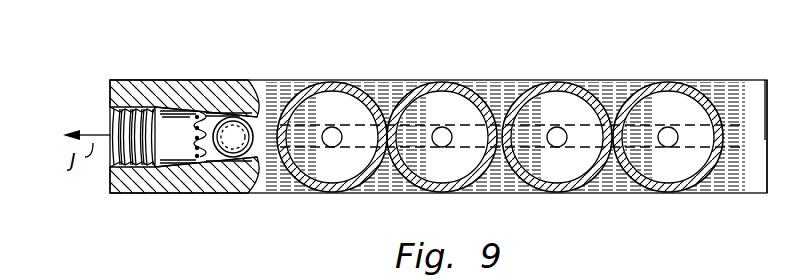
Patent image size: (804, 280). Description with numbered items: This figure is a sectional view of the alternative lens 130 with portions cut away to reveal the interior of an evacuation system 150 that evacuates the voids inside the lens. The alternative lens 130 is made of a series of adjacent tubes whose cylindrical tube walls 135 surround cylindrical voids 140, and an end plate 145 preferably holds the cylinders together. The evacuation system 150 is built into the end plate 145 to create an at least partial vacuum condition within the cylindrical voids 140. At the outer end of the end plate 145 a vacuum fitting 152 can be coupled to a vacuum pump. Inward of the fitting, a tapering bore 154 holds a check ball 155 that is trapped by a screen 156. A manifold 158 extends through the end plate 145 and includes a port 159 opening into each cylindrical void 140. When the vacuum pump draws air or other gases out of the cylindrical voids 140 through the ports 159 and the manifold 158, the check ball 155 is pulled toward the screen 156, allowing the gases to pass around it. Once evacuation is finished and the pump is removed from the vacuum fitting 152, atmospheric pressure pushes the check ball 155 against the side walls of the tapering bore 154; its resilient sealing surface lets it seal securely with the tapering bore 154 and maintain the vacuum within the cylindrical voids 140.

The alternative lens 130 is at (603, 60).
The cylindrical tube walls 135 is at (522, 88).
The cylindrical voids 140 is at (325, 105).
The end plate 145 is at (728, 80).
The evacuation system 150 is at (114, 58).
The vacuum fitting 152 is at (138, 160).
The tapering bore 154 is at (182, 145).
The check ball 155 is at (235, 147).
The screen 156 is at (188, 128).
The manifold 158 is at (349, 147).
The port 159 is at (444, 140).